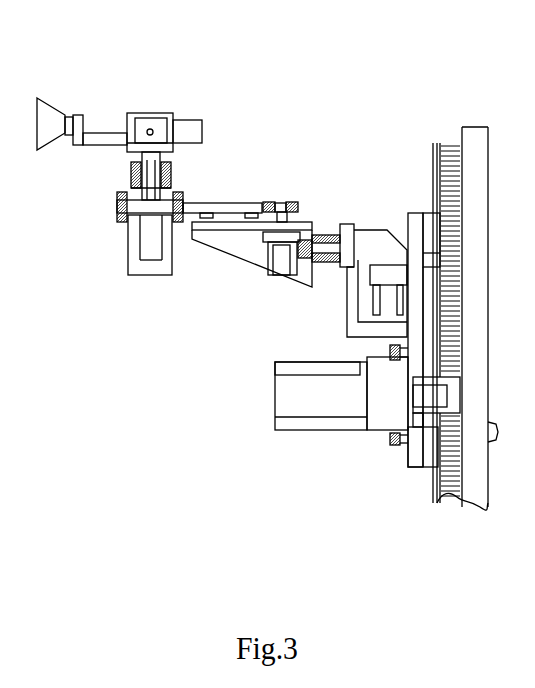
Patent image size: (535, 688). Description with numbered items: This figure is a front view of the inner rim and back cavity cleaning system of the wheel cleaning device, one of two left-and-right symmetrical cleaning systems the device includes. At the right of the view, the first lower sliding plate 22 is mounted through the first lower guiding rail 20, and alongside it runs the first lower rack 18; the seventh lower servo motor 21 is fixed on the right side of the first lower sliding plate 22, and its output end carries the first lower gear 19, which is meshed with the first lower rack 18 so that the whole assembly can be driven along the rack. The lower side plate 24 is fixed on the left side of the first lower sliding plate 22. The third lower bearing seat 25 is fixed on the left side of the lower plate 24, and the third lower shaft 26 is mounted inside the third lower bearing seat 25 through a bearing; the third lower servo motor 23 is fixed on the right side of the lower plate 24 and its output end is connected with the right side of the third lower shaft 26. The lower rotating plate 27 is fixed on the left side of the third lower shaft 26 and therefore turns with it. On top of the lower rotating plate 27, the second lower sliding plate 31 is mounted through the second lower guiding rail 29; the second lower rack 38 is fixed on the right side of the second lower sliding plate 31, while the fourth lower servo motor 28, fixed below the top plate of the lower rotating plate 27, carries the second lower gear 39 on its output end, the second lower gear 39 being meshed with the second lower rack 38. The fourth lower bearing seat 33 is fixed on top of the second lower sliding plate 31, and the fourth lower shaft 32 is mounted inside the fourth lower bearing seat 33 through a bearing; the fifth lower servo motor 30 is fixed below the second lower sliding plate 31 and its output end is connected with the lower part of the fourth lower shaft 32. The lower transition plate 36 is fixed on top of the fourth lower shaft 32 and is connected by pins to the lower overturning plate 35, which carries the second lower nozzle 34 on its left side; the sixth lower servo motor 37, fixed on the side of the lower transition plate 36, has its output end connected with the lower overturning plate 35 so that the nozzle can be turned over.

The first lower rack 18 is at (443, 491).
The first lower gear 19 is at (451, 401).
The first lower guiding rail 20 is at (429, 353).
The seventh lower servo motor 21 is at (372, 401).
The first lower sliding plate 22 is at (411, 333).
The third lower servo motor 23 is at (389, 283).
The lower side plate 24 is at (347, 293).
The third lower bearing seat 25 is at (344, 257).
The third lower shaft 26 is at (324, 249).
The lower rotating plate 27 is at (285, 244).
The fourth lower servo motor 28 is at (251, 259).
The second lower guiding rail 29 is at (254, 217).
The fifth lower servo motor 30 is at (196, 207).
The second lower sliding plate 31 is at (152, 257).
The fourth lower shaft 32 is at (144, 196).
The fourth lower bearing seat 33 is at (132, 180).
The second lower nozzle 34 is at (43, 115).
The lower overturning plate 35 is at (90, 131).
The lower transition plate 36 is at (131, 145).
The sixth lower servo motor 37 is at (175, 131).
The second lower rack 38 is at (270, 201).
The second lower gear 39 is at (291, 201).